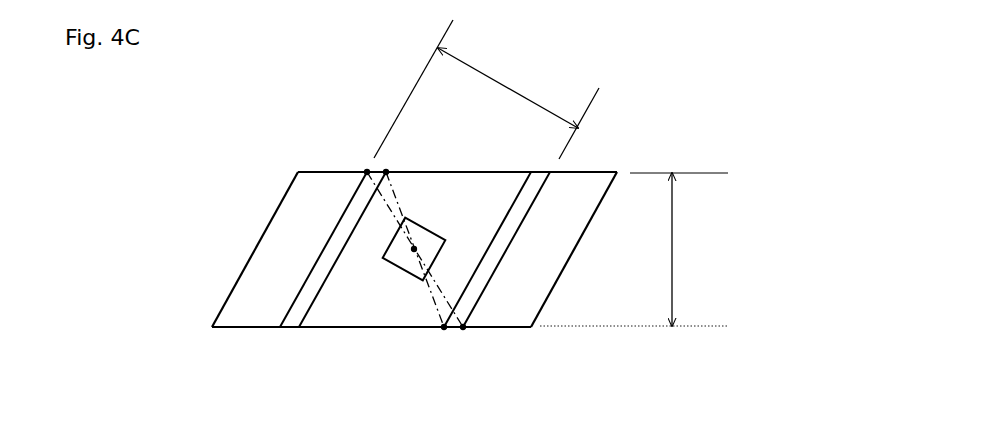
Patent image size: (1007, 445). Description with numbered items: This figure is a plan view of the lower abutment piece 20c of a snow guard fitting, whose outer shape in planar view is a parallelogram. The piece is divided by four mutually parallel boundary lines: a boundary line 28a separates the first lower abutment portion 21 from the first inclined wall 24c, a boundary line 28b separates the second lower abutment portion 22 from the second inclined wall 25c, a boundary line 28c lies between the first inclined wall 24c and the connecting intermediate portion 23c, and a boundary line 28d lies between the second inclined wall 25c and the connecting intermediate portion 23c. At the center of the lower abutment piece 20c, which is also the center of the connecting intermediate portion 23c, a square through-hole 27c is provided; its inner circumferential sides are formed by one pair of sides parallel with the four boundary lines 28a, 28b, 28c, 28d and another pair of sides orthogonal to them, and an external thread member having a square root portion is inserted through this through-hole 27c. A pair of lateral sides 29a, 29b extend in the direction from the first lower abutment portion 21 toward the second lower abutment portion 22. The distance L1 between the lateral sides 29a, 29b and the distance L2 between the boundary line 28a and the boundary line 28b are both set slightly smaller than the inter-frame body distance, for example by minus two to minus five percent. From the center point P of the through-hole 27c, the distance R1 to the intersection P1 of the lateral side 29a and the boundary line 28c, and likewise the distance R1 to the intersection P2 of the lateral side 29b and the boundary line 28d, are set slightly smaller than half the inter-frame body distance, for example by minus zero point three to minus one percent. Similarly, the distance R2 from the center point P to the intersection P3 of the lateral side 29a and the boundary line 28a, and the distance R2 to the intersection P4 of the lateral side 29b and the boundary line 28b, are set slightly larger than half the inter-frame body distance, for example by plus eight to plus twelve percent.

The lower abutment piece 20c is at (413, 243).
The first lower abutment portion 21 is at (265, 262).
The second lower abutment portion 22 is at (548, 243).
The connecting intermediate portion 23c is at (370, 313).
The first inclined wall 24c is at (291, 285).
The second inclined wall 25c is at (549, 280).
The square through-hole 27c is at (428, 312).
The boundary line 28a is at (313, 265).
The boundary line 28b is at (507, 250).
The boundary line 28c is at (317, 293).
The boundary line 28d is at (486, 281).
The lateral side 29a is at (464, 170).
The lateral side 29b is at (330, 328).
The center point P is at (416, 246).
The intersection P1 is at (399, 159).
The intersection P2 is at (432, 341).
The intersection P3 is at (355, 159).
The intersection P4 is at (476, 341).
The distance R1 is at (415, 249).
The distance R2 is at (413, 249).
The distance L1 is at (634, 249).
The distance L2 is at (486, 89).